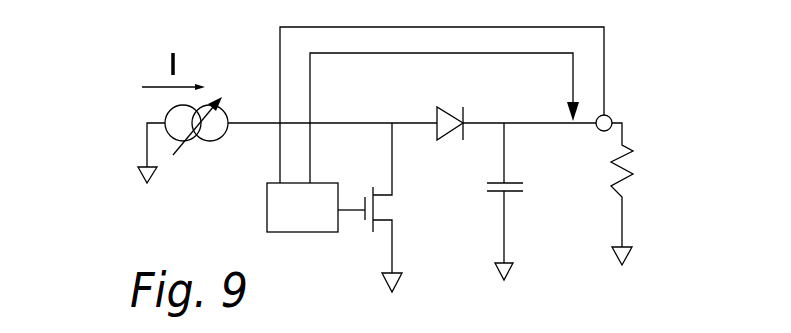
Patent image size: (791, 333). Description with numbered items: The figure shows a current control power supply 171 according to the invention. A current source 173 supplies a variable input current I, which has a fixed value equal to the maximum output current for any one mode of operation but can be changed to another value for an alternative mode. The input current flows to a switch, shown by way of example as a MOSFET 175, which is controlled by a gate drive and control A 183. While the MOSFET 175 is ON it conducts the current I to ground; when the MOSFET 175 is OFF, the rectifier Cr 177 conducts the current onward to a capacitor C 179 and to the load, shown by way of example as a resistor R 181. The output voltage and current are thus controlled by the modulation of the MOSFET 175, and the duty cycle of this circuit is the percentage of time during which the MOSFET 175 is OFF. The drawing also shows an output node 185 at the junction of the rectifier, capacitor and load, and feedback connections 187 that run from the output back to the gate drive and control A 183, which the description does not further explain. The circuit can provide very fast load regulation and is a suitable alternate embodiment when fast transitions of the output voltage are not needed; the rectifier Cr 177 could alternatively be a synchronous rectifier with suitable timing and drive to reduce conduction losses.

The current control power supply 171 is at (107, 113).
The current source 173 is at (205, 147).
The MOSFET 175 is at (398, 213).
The rectifier Cr 177 is at (475, 110).
The capacitor C 179 is at (510, 205).
The resistor R 181 is at (632, 197).
The gate drive and control A 183 is at (283, 237).
The output node 185 is at (612, 110).
The feedback connections 187 is at (583, 110).